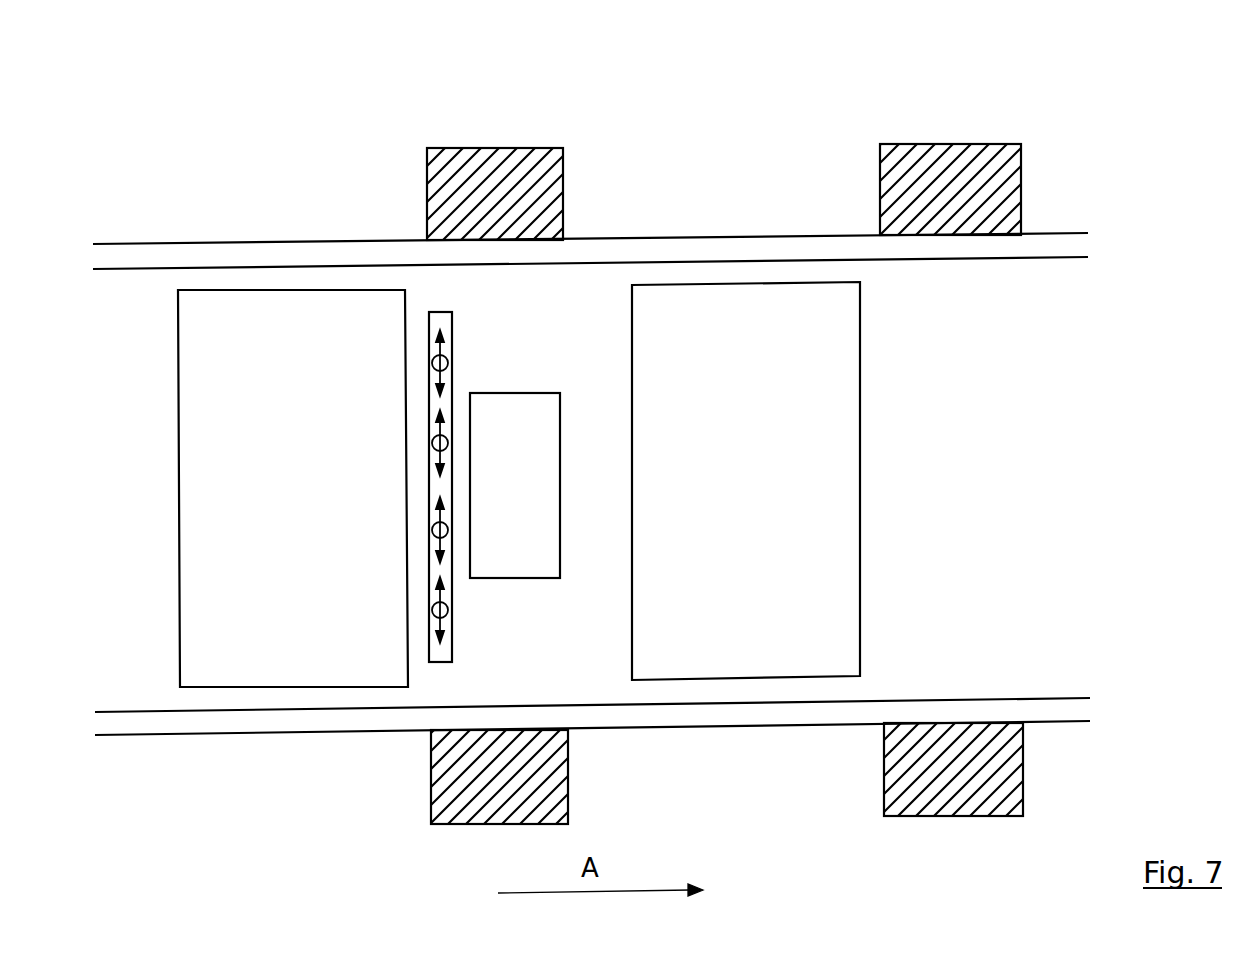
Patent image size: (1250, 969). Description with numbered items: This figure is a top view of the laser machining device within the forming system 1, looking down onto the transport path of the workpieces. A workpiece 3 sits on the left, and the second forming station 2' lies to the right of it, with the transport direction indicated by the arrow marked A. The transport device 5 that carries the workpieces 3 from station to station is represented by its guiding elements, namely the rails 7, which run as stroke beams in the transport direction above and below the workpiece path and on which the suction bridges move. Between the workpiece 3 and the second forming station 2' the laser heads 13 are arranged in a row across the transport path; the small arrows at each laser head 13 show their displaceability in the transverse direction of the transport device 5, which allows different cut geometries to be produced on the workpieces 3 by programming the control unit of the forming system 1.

The forming system 1 is at (701, 190).
The second forming station 2' is at (746, 481).
The workpiece 3 is at (312, 563).
The transport device 5 is at (396, 209).
The rail 7 is at (796, 246).
The laser heads 13 is at (432, 370).